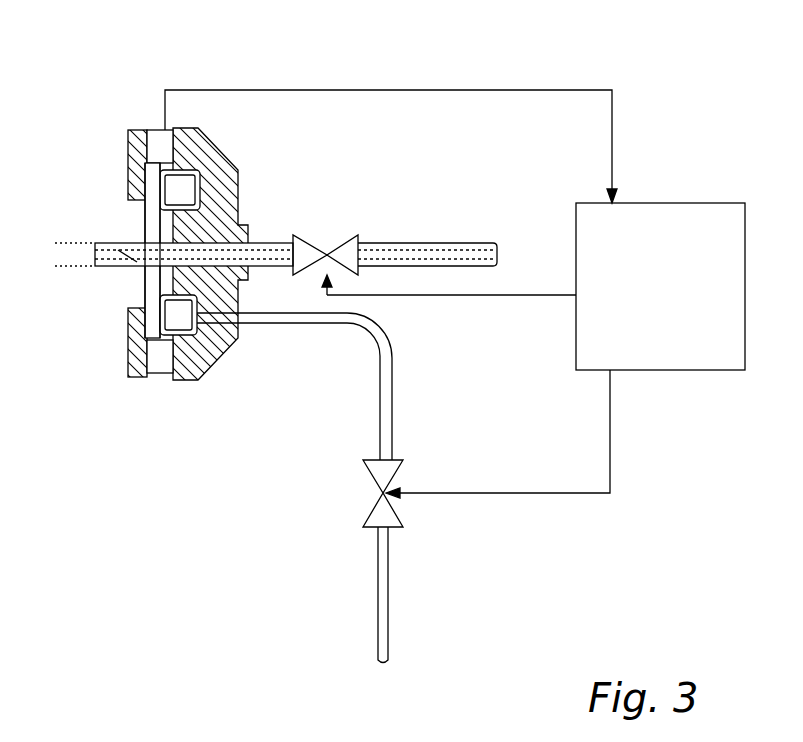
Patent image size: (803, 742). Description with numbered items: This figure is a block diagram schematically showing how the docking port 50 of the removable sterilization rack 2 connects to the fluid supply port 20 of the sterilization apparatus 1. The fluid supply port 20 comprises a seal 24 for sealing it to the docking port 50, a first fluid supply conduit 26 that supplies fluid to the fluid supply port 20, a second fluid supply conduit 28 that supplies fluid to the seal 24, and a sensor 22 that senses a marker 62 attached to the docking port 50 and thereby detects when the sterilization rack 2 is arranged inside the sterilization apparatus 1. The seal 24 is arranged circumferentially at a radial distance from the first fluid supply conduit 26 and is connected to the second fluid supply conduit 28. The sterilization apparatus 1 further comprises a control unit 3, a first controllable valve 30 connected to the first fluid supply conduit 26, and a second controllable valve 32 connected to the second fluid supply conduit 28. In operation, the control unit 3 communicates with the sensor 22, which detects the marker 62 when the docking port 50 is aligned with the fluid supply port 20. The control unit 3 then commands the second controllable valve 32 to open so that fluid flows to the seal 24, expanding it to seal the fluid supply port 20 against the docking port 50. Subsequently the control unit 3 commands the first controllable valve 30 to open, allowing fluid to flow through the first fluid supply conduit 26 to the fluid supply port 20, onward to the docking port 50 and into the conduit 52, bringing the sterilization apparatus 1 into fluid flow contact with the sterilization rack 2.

The sterilization apparatus 1 is at (534, 68).
The sterilization rack 2 is at (69, 126).
The control unit 3 is at (663, 203).
The fluid supply port 20 is at (213, 162).
The sensor 22 is at (203, 140).
The seal 24 is at (195, 380).
The first fluid supply conduit 26 is at (243, 255).
The second fluid supply conduit 28 is at (215, 318).
The first controllable valve 30 is at (345, 245).
The second controllable valve 32 is at (397, 458).
The docking port 50 is at (140, 282).
The conduit 52 is at (85, 250).
The marker 62 is at (133, 140).